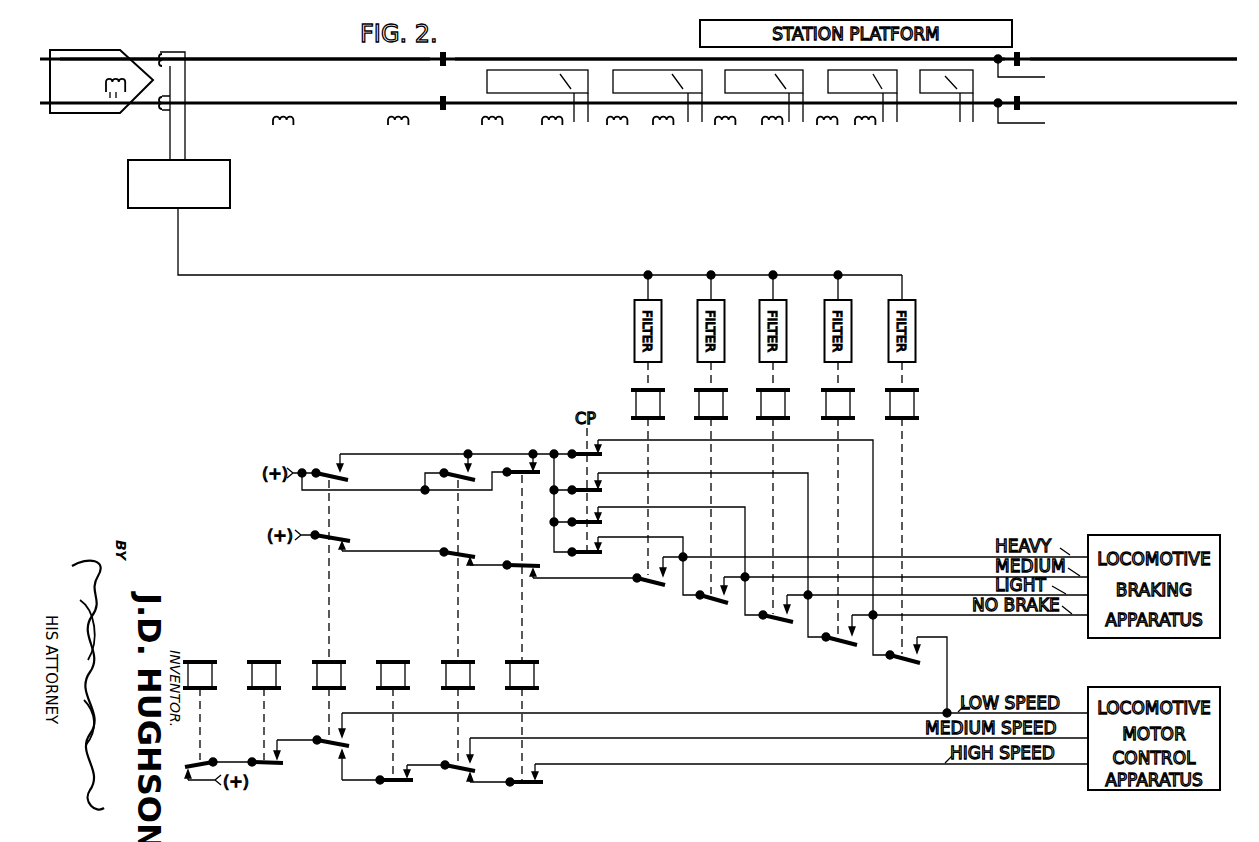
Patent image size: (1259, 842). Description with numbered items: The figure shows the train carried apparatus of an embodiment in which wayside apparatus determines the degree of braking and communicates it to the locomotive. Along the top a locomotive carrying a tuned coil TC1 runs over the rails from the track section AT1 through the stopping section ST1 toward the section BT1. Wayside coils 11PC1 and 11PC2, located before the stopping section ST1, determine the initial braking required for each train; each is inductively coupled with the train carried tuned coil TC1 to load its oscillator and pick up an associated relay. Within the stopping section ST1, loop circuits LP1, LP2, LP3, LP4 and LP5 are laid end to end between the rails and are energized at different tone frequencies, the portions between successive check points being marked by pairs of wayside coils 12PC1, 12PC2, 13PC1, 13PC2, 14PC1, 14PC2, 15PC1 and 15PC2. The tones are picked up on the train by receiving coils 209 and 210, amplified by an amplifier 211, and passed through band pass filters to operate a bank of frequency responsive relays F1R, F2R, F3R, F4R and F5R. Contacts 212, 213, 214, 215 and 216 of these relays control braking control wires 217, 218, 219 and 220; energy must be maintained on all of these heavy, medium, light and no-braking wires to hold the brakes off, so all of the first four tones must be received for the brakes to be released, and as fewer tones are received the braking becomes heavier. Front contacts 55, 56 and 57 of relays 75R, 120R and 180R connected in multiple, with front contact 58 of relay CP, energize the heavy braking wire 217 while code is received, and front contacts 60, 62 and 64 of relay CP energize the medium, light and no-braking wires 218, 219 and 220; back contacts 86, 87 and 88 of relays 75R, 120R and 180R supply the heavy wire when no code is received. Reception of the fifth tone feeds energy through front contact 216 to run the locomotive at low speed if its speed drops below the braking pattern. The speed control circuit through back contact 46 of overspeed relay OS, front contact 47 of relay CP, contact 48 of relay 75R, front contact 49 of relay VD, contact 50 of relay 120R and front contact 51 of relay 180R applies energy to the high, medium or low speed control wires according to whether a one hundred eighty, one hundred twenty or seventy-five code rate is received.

The receiving coil 209 is at (162, 54).
The receiving coil 210 is at (158, 110).
The amplifier 211 is at (231, 193).
The front contact of relay 75R 55 is at (336, 472).
The front contact of relay 120R 56 is at (450, 470).
The front contact of relay 180R 57 is at (520, 478).
The front contact of relay CP 58 is at (583, 550).
The front contact of relay CP 60 is at (583, 520).
The front contact of relay CP 62 is at (583, 488).
The front contact of relay CP 64 is at (580, 451).
The back contact of relay 75R 86 is at (330, 541).
The back contact of relay 120R 87 is at (458, 555).
The back contact of relay 180R 88 is at (524, 570).
The contact of relay F1R 212 is at (652, 584).
The contact of relay F2R 213 is at (715, 602).
The contact of relay F3R 214 is at (779, 622).
The contact of relay F4R 215 is at (843, 643).
The front contact of relay F5R 216 is at (907, 662).
The braking control wire 217 is at (944, 556).
The braking control wire 218 is at (944, 576).
The braking control wire 219 is at (944, 594).
The braking control wire 220 is at (944, 614).
The back contact of overspeed relay OS 46 is at (203, 763).
The front contact of relay CP 47 is at (272, 767).
The contact of relay 75R 48 is at (332, 746).
The front contact of relay VD 49 is at (396, 784).
The contact of relay 120R 50 is at (460, 770).
The front contact of relay 180R 51 is at (527, 786).
The train carried tuned coil TC1 is at (111, 78).
The approach track section AT1 is at (278, 62).
The stopping section ST1 is at (580, 58).
The beyond track section BT1 is at (1124, 59).
The loop circuit LP1 is at (537, 96).
The loop circuit LP2 is at (657, 96).
The loop circuit LP3 is at (764, 96).
The loop circuit LP4 is at (862, 96).
The loop circuit LP5 is at (946, 96).
The wayside coil 11PC1 is at (284, 127).
The wayside coil 11PC2 is at (399, 127).
The wayside coil 12PC1 is at (492, 127).
The wayside coil 12PC2 is at (552, 127).
The wayside coil 13PC1 is at (617, 127).
The wayside coil 13PC2 is at (663, 127).
The wayside coil 14PC1 is at (725, 127).
The wayside coil 14PC2 is at (772, 127).
The wayside coil 15PC1 is at (827, 127).
The wayside coil 15PC2 is at (866, 127).
The frequency responsive relay F1R is at (641, 392).
The frequency responsive relay F2R is at (705, 392).
The frequency responsive relay F3R is at (767, 392).
The frequency responsive relay F4R is at (831, 392).
The frequency responsive relay F5R is at (897, 392).
The overspeed relay OS is at (200, 662).
The relay CP is at (264, 662).
The relay 75R is at (327, 664).
The relay VD is at (393, 662).
The relay 120R is at (458, 664).
The relay 180R is at (523, 664).